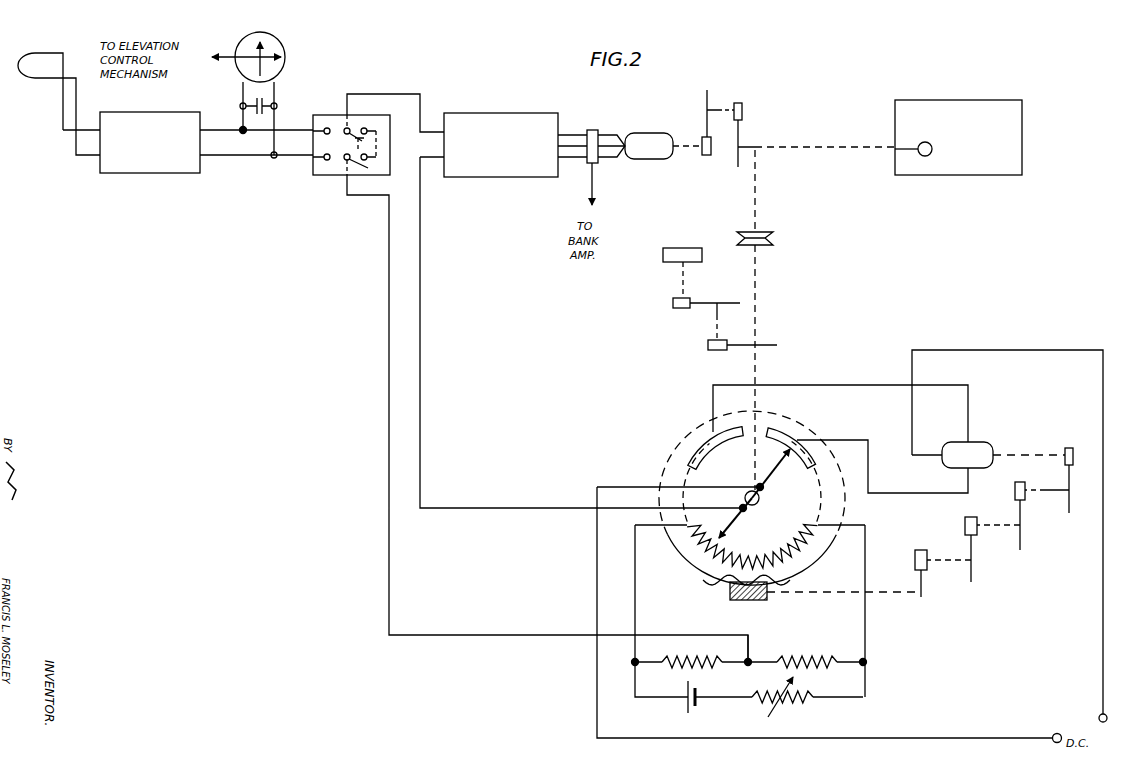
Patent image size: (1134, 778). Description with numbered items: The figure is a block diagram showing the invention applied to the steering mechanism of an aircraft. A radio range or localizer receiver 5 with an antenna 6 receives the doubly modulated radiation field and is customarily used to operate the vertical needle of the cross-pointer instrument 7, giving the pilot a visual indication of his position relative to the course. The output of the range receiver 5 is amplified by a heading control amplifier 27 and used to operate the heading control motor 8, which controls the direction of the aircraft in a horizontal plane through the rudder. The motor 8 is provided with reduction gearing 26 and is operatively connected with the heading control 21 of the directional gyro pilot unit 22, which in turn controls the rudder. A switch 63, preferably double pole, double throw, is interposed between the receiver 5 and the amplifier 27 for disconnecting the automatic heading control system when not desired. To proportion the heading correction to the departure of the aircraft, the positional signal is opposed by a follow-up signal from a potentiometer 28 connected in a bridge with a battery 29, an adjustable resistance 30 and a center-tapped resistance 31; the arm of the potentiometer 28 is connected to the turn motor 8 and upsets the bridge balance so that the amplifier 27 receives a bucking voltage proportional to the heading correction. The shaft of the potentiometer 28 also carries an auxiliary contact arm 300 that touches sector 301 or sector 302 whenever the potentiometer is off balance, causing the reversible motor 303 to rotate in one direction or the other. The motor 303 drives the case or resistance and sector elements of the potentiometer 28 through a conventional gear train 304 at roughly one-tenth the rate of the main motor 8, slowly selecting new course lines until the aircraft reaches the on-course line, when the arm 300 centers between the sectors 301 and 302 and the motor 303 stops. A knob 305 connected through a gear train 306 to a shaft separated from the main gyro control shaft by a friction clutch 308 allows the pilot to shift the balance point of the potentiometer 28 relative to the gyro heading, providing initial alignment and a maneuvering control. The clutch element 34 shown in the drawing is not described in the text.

The radio range receiver 5 is at (140, 166).
The antenna 6 is at (28, 62).
The cross-pointer instrument 7 is at (275, 44).
The heading control motor 8 is at (654, 133).
The heading control 21 is at (934, 149).
The directional gyro pilot unit 22 is at (958, 152).
The reduction gearing 26 is at (722, 100).
The heading control amplifier 27 is at (490, 116).
The potentiometer 28 is at (719, 543).
The battery 29 is at (685, 702).
The adjustable resistance 30 is at (790, 700).
The center-tapped resistance 31 is at (783, 665).
The clutch 34 is at (594, 130).
The switch 63 is at (328, 176).
The auxiliary contact arm 300 is at (770, 477).
The sector 301 is at (697, 446).
The sector 302 is at (787, 430).
The motor 303 is at (977, 450).
The gear train 304 is at (985, 552).
The knob 305 is at (670, 257).
The gear train 306 is at (707, 329).
The friction clutch 308 is at (775, 230).